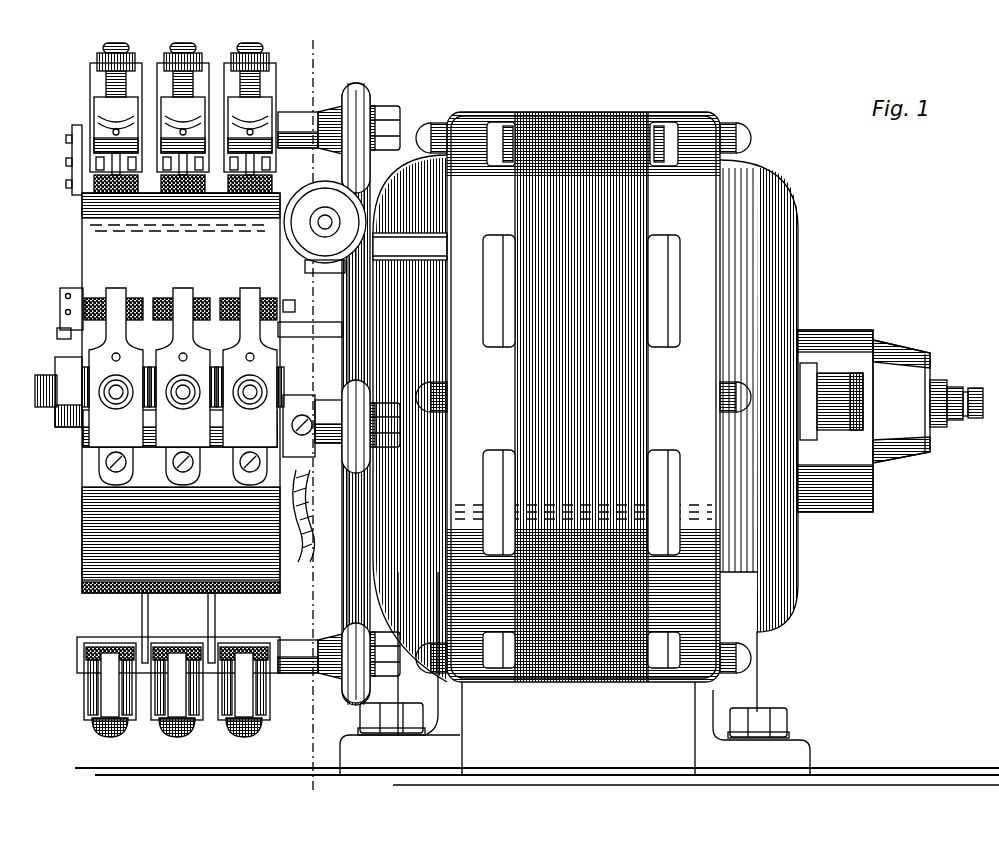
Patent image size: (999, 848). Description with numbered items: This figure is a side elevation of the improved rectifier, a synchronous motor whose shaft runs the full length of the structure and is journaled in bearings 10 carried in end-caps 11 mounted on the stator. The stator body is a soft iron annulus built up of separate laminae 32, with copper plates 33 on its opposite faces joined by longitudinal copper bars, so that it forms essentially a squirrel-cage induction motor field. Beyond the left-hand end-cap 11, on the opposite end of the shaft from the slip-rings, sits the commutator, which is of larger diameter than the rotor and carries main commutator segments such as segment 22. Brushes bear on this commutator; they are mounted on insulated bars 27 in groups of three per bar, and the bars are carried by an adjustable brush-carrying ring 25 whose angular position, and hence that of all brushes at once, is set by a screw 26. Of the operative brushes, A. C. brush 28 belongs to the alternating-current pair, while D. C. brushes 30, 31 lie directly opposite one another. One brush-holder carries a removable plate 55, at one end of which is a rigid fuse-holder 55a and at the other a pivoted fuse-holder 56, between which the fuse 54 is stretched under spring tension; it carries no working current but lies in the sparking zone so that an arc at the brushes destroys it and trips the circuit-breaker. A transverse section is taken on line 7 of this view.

The section line 7 is at (284, 38).
The bearings 10 is at (320, 340).
The end-caps 11 is at (585, 412).
The main commutator segment 22 is at (97, 255).
The adjustable brush-carrying ring 25 is at (356, 364).
The screw 26 is at (326, 205).
The insulated bars 27 is at (300, 120).
The A. C. brush 28 is at (145, 297).
The D. C. brush 30 is at (252, 194).
The D. C. brush 31 is at (178, 594).
The laminae 32 is at (592, 684).
The copper plates 33 is at (512, 684).
The fuse 54 is at (60, 334).
The removable plate 55 is at (226, 292).
The rigid fuse-holder 55a is at (60, 315).
The pivoted fuse-holder 56 is at (296, 306).